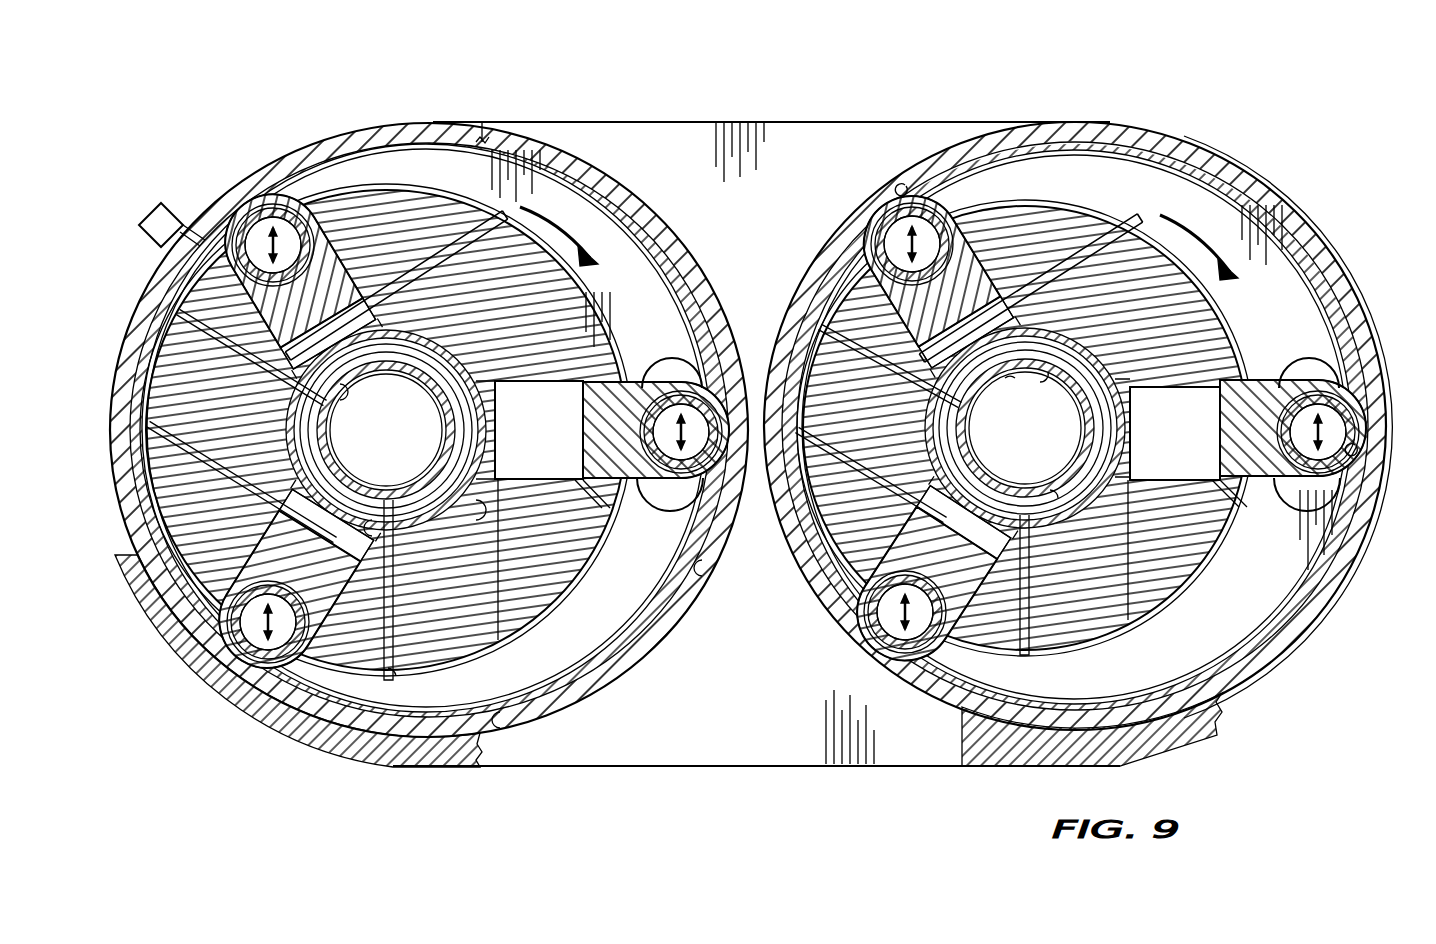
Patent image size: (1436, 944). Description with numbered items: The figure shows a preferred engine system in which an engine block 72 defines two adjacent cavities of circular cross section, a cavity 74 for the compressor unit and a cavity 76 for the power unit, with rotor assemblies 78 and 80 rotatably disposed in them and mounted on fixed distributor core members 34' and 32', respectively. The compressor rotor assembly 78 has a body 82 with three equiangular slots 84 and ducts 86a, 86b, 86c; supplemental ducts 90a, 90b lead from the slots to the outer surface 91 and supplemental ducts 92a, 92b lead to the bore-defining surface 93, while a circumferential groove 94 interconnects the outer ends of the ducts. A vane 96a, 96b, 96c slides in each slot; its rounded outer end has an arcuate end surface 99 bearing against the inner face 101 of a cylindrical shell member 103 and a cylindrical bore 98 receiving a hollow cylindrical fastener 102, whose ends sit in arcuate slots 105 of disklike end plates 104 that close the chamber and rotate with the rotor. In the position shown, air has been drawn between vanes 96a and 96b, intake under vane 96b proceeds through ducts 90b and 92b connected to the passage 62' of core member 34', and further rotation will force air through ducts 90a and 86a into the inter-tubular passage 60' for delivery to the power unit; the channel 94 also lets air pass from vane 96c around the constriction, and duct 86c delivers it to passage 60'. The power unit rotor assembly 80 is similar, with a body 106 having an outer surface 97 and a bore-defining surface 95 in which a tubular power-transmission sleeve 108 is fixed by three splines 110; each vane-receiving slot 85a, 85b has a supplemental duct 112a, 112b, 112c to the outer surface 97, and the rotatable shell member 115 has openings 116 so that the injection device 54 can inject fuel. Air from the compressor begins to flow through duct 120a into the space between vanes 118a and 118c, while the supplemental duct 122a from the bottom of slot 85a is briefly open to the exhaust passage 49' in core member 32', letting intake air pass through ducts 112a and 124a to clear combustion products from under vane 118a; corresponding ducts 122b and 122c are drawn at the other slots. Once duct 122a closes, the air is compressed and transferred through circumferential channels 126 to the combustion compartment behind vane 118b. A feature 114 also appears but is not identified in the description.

The engine block 72 is at (795, 140).
The cavity 74 is at (1295, 228).
The cavity 76 is at (615, 196).
The compressor unit rotor assembly 78 is at (1080, 195).
The power unit rotor assembly 80 is at (435, 180).
The rotor body 82 is at (1100, 645).
The slots 84 is at (1210, 540).
The vane-receiving slot 85a is at (585, 360).
The vane-receiving slot 85b is at (350, 298).
The duct 86a is at (1027, 648).
The duct 86b is at (1210, 316).
The duct 86c is at (858, 340).
The supplemental duct 90a is at (1135, 610).
The supplemental duct 90b is at (1090, 256).
The outer surface 91 is at (1132, 640).
The supplemental duct 92a is at (1138, 428).
The supplemental duct 92b is at (1012, 378).
The bore-defining surface 93 is at (1050, 372).
The circumferential grooves 94 is at (1215, 495).
The bore-defining surface 95 is at (476, 520).
The vane 96a is at (1255, 385).
The vane 96b is at (885, 215).
The vane 96c is at (975, 645).
The outer surface 97 is at (470, 238).
The cylindrical bore 98 is at (1355, 445).
The arcuate end surface 99 is at (905, 185).
The inner face 101 is at (1215, 192).
The hollow cylindrical fastener 102 is at (735, 350).
The cylindrical shell member 103 is at (1248, 680).
The disklike end plates 104 is at (500, 712).
The slots 105 is at (702, 560).
The rotor body 106 is at (555, 585).
The tubular power-transmission sleeve 108 is at (150, 495).
The splines 110 is at (425, 420).
The supplemental duct 112a is at (585, 470).
The supplemental duct 112b is at (340, 212).
The supplemental duct 112c is at (210, 640).
The liner joint 114 is at (480, 142).
The rotatable shell member 115 is at (620, 660).
The openings 116 is at (206, 235).
The vane 118a is at (618, 500).
The vane 118b is at (300, 200).
The vane 118c is at (205, 690).
The duct 120a is at (392, 675).
The supplemental duct 122a is at (498, 398).
The supplemental duct 122b is at (332, 384).
The supplemental duct 122c is at (372, 520).
The duct 124a is at (395, 655).
The circumferential channels 126 is at (145, 300).
The fixed distributor core member 32' is at (421, 385).
The fixed distributor core member 34' is at (1054, 394).
The exhaust passage 49' is at (204, 344).
The injection device 54 is at (165, 205).
The inter-tubular passage 60' is at (1025, 428).
The passage 62' is at (1081, 522).